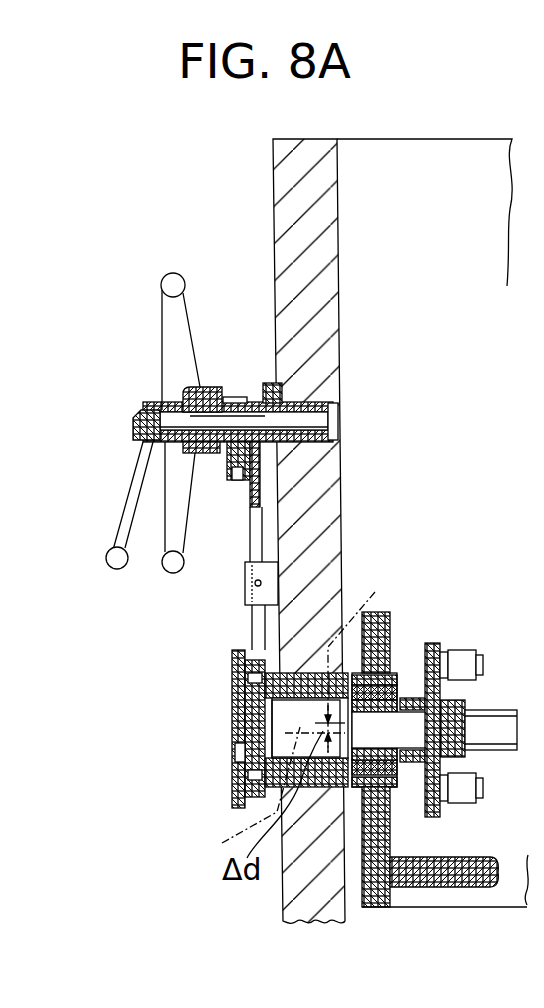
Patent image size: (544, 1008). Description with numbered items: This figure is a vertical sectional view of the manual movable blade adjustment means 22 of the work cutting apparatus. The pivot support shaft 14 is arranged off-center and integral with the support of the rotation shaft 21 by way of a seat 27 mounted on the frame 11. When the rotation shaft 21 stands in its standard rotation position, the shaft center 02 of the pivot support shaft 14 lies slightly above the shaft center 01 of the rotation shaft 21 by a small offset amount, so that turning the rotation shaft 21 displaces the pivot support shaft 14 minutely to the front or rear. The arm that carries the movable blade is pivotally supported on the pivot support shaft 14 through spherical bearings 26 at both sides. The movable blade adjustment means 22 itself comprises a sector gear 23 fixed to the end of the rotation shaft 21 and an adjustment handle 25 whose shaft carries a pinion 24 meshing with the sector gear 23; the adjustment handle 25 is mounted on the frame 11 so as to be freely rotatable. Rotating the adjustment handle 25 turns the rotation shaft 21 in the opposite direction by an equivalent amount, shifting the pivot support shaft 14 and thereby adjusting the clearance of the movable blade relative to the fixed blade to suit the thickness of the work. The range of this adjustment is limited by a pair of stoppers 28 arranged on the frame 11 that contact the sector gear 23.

The frame 11 is at (273, 208).
The movable blade adjustment means 22 is at (128, 378).
The adjustment handle 25 is at (163, 292).
The pinion 24 is at (237, 397).
The sector gear 23 is at (240, 480).
The stoppers 28 is at (277, 580).
The seat 27 is at (297, 673).
The rotation shaft 21 is at (285, 723).
The bearings 26 is at (397, 672).
The pivot support shaft 14 is at (497, 710).
The shaft center of the pivot support shaft 02 is at (373, 656).
The shaft center of the rotation shaft 01 is at (246, 792).